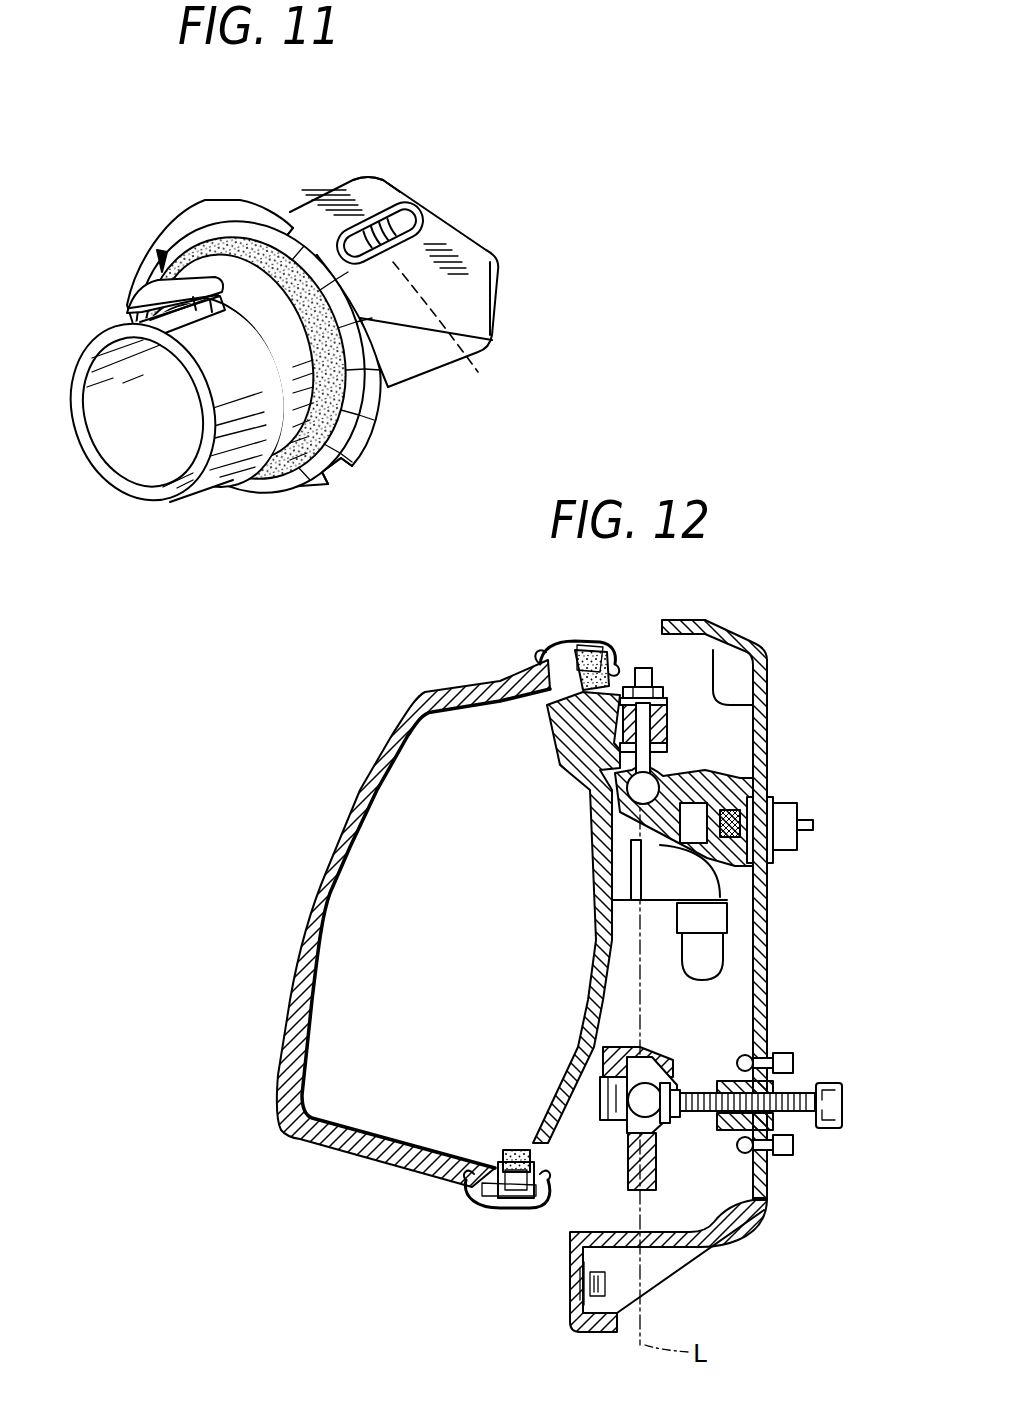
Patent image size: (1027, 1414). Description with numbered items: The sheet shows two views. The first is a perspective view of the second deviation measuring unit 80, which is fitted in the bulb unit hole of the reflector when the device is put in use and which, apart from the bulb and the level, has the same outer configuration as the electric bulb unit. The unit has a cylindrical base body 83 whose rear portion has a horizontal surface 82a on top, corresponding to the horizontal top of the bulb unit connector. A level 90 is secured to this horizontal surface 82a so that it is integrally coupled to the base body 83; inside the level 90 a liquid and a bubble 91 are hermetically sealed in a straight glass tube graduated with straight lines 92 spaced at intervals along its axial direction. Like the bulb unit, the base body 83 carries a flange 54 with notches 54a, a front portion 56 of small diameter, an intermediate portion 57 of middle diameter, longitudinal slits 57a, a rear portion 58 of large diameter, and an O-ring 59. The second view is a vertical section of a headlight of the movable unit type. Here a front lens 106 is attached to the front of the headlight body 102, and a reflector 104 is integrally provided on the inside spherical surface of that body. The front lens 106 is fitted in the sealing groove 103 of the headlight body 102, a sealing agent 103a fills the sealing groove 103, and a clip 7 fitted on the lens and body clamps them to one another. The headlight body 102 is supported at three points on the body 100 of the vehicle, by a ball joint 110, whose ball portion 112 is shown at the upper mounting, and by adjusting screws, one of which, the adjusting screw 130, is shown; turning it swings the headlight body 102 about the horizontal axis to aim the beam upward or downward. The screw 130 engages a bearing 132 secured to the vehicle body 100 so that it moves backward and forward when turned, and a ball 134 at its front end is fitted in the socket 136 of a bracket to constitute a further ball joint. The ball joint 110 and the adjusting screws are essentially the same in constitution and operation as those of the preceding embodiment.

In FIG. 11, the flange 54 is at (224, 198).
In FIG. 11, the notches 54a is at (300, 235).
In FIG. 11, the front portion of small diameter 56 is at (222, 435).
In FIG. 11, the intermediate portion of middle diameter 57 is at (281, 470).
In FIG. 11, the longitudinal slits 57a is at (128, 306).
In FIG. 11, the rear portion of large diameter 58 is at (345, 398).
In FIG. 11, the O-ring 59 is at (340, 437).
In FIG. 11, the second deviation measuring unit 80 is at (350, 170).
In FIG. 11, the horizontal surface 82a is at (363, 187).
In FIG. 11, the cylindrical base body 83 is at (160, 262).
In FIG. 11, the level 90 is at (403, 197).
In FIG. 11, the bubble 91 is at (443, 330).
In FIG. 11, the straight lines 92 is at (385, 207).
In FIG. 12, the clip 7 is at (593, 648).
In FIG. 12, the body of a vehicle 100 is at (760, 667).
In FIG. 12, the body of the headlight 102 is at (617, 951).
In FIG. 12, the sealing groove 103 is at (584, 650).
In FIG. 12, the sealing agent 103a is at (603, 652).
In FIG. 12, the reflector 104 is at (578, 787).
In FIG. 12, the front lens 106 is at (320, 872).
In FIG. 12, the ball joint 110 is at (680, 749).
In FIG. 12, the ball joint 112 is at (652, 776).
In FIG. 12, the adjusting screw 130 is at (670, 1158).
In FIG. 12, the bearing 132 is at (782, 1082).
In FIG. 12, the ball 134 is at (610, 1130).
In FIG. 12, the socket 136 is at (647, 1053).